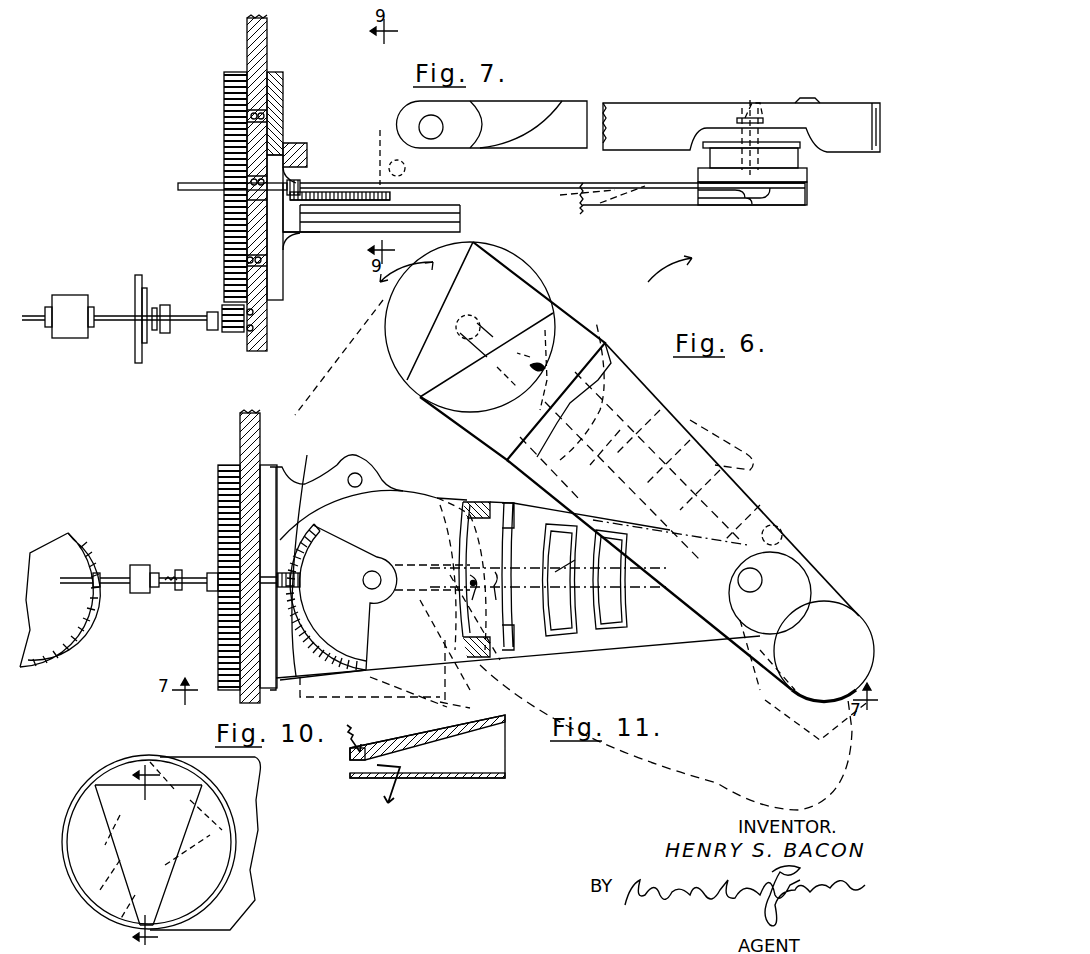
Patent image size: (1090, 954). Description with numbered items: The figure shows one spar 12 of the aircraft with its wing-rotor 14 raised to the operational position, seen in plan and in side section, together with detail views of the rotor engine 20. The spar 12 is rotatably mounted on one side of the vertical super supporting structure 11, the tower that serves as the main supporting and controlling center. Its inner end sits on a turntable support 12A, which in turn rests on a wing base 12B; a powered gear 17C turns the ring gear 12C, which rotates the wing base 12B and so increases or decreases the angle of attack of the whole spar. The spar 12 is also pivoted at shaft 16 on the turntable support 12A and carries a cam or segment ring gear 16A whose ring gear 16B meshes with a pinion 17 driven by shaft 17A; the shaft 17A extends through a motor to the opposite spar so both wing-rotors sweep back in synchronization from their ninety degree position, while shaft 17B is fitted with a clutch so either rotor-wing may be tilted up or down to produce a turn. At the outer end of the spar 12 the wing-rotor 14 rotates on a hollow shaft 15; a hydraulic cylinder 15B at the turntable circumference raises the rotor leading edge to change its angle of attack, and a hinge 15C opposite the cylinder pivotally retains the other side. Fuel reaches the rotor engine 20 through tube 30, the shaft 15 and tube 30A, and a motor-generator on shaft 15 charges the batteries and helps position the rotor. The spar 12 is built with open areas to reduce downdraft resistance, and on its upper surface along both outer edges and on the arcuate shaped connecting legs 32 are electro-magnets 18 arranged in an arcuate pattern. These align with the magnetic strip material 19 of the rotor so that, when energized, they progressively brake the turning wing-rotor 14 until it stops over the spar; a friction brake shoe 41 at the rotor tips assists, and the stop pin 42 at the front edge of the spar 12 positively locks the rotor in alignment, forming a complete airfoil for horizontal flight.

In FIG. 7, the super supporting structure 11 is at (267, 26).
In FIG. 6, the super supporting structure 11 is at (250, 556).
In FIG. 10, the super supporting structure 11 is at (150, 852).
In FIG. 7, the spar 12 is at (640, 206).
In FIG. 6, the spar 12 is at (692, 638).
In FIG. 6, the turntable support 12A is at (424, 500).
In FIG. 7, the wing base 12B is at (283, 110).
In FIG. 7, the ring gear 12C is at (224, 118).
In FIG. 6, the ring gear 12C is at (218, 494).
In FIG. 7, the wing-rotor 14 is at (661, 103).
In FIG. 6, the wing-rotor 14 is at (665, 402).
In FIG. 7, the hollow shaft 15 is at (764, 102).
In FIG. 6, the hollow shaft 15 is at (804, 556).
In FIG. 7, the hydraulic cylinder 15B is at (748, 104).
In FIG. 6, the hydraulic cylinder 15B is at (782, 527).
In FIG. 7, the hinge 15C is at (770, 148).
In FIG. 6, the hinge 15C is at (768, 700).
In FIG. 7, the shaft 16 is at (380, 140).
In FIG. 6, the shaft 16 is at (370, 584).
In FIG. 7, the segment ring gear 16A is at (400, 200).
In FIG. 6, the segment ring gear 16A is at (376, 618).
In FIG. 7, the ring gear 16B is at (322, 232).
In FIG. 6, the ring gear 16B is at (326, 640).
In FIG. 7, the pinion 17 is at (300, 183).
In FIG. 6, the pinion 17 is at (300, 581).
In FIG. 7, the shaft 17A is at (178, 187).
In FIG. 6, the shaft 17A is at (147, 593).
In FIG. 7, the shaft 17B is at (110, 322).
In FIG. 7, the powered gear 17C is at (222, 334).
In FIG. 7, the electro-magnets 18 is at (580, 200).
In FIG. 6, the electro-magnets 18 is at (618, 645).
In FIG. 6, the magnetic strip material 19 is at (598, 326).
In FIG. 7, the rotor engine 20 is at (475, 110).
In FIG. 6, the rotor engine 20 is at (522, 282).
In FIG. 10, the rotor engine 20 is at (113, 832).
In FIG. 6, the tube 30 is at (498, 592).
In FIG. 6, the tube 30A is at (534, 322).
In FIG. 6, the arcuate shaped connecting legs 32 is at (472, 498).
In FIG. 7, the brake shoe 41 is at (296, 143).
In FIG. 6, the brake shoe 41 is at (300, 470).
In FIG. 6, the stop pin 42 is at (375, 470).